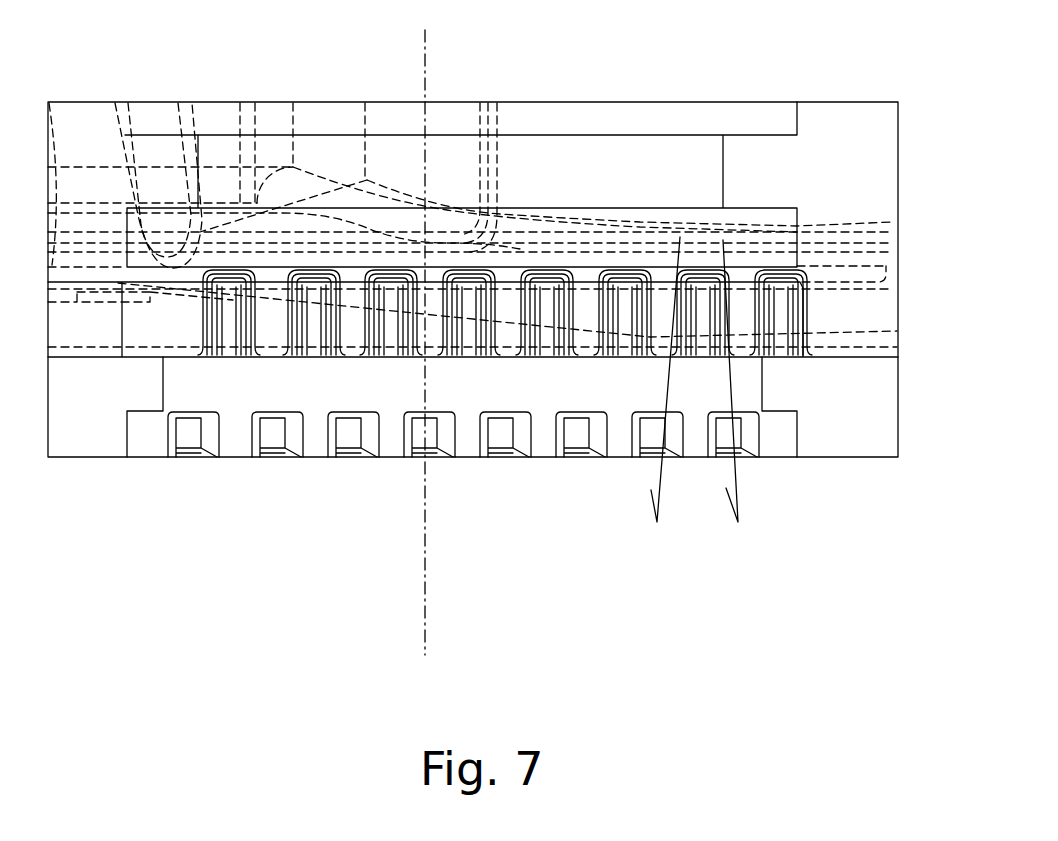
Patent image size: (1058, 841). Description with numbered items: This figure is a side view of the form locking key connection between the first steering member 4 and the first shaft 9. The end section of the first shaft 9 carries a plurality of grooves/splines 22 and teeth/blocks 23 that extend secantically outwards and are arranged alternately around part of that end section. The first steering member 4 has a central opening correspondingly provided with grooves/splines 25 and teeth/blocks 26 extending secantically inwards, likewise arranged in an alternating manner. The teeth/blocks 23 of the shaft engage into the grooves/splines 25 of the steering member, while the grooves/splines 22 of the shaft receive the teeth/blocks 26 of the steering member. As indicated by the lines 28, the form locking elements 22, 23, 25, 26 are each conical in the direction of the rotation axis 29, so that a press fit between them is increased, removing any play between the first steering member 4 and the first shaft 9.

The first steering member 4 is at (848, 305).
The first shaft 9 is at (700, 118).
The grooves/splines 22 is at (345, 440).
The teeth/blocks 23 is at (316, 442).
The grooves/splines 25 is at (388, 312).
The teeth/blocks 26 is at (470, 310).
The lines 28 is at (660, 472).
The rotation axis 29 is at (422, 577).